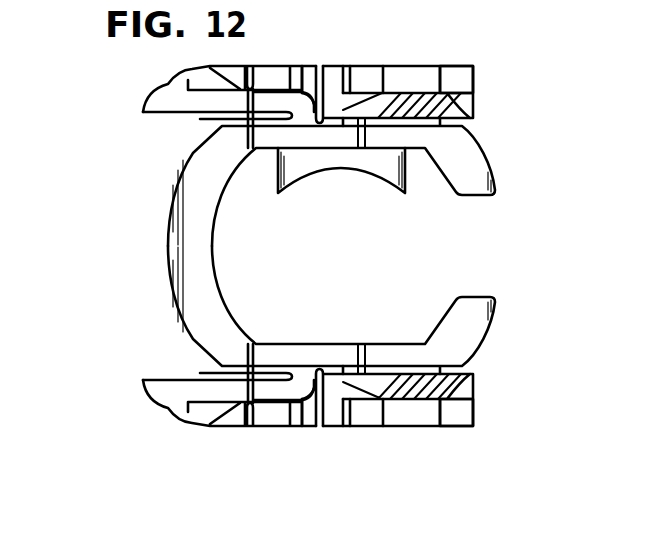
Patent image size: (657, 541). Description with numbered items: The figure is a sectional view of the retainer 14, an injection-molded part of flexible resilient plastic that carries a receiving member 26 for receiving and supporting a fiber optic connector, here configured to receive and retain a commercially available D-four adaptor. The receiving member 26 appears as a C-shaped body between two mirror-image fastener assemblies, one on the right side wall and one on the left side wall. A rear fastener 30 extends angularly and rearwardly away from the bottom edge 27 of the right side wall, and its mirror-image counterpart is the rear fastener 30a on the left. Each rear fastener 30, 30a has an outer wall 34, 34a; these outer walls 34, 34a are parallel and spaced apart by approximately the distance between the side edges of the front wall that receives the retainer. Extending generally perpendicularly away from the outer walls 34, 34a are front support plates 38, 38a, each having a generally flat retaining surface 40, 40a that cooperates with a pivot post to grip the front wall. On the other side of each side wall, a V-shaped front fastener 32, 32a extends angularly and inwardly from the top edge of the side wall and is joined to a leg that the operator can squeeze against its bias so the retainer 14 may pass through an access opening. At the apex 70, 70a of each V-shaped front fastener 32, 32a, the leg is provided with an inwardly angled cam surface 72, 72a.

The retainer 14 is at (100, 170).
The receiving member 26 is at (377, 176).
The bottom edge 27 is at (364, 246).
The rear fastener 30 is at (462, 84).
The rear fastener 30a is at (462, 418).
The front fastener 32 is at (322, 58).
The front fastener 32a is at (308, 436).
The outer wall 34 is at (400, 76).
The outer wall 34a is at (358, 428).
The front support plate 38 is at (373, 66).
The front support plate 38a is at (413, 427).
The retaining surface 40 is at (417, 70).
The retaining surface 40a is at (430, 420).
The apex 70 is at (147, 108).
The apex 70a is at (145, 384).
The cam surface 72 is at (167, 92).
The cam surface 72a is at (163, 393).